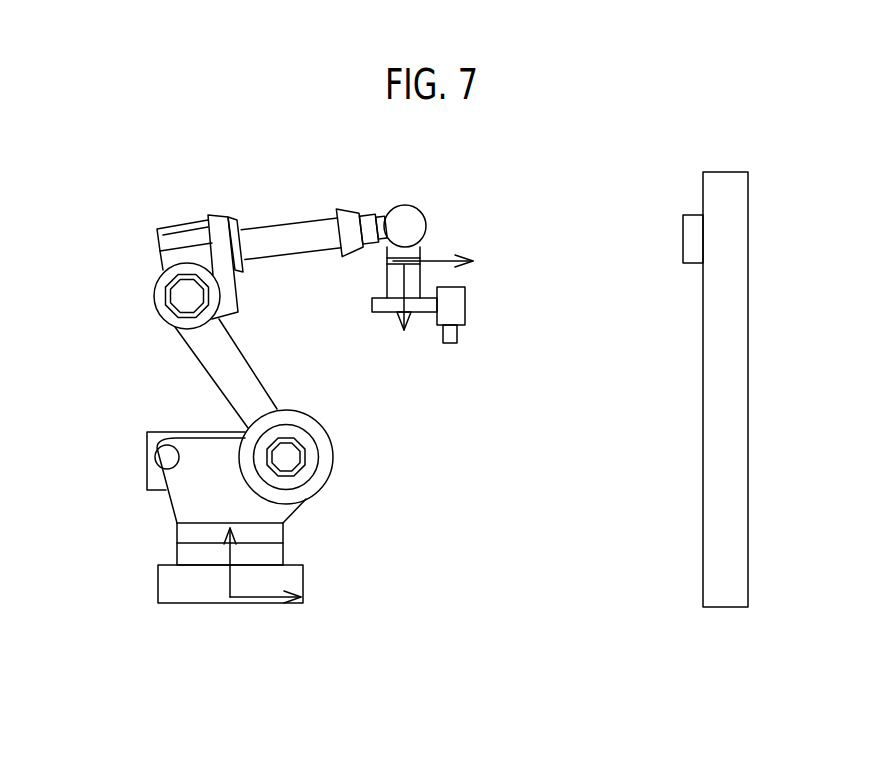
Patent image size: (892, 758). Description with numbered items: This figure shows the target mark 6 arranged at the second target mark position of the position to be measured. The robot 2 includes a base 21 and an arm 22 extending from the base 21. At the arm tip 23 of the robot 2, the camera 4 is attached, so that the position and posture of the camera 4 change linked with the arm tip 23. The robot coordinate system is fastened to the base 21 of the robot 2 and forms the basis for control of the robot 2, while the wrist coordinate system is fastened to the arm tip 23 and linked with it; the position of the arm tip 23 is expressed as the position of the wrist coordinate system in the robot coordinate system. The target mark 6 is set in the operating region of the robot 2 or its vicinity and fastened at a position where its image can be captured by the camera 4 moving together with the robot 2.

The robot 2 is at (108, 253).
The base 21 is at (303, 577).
The arm 22 is at (275, 223).
The arm tip 23 is at (387, 262).
The camera 4 is at (465, 298).
The target mark 6 is at (702, 215).